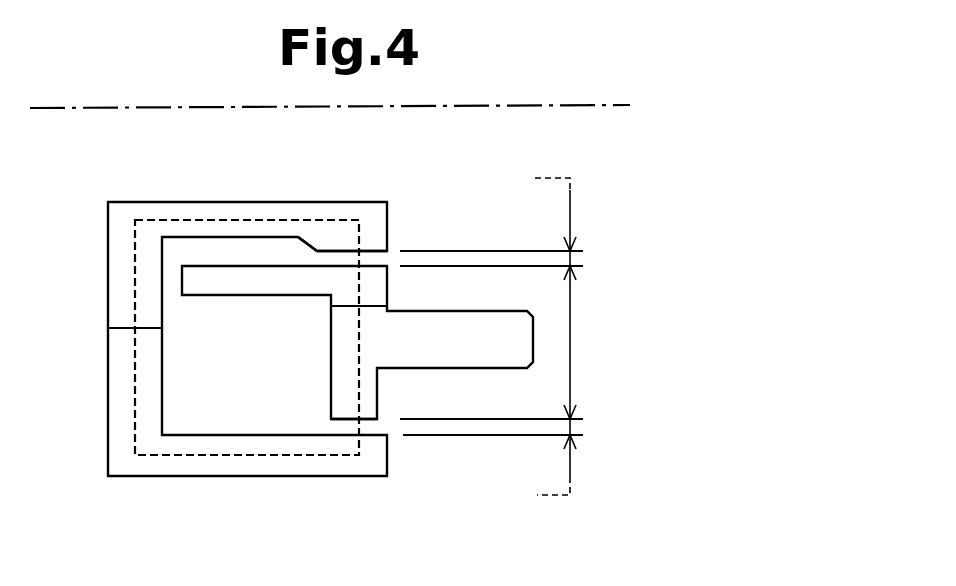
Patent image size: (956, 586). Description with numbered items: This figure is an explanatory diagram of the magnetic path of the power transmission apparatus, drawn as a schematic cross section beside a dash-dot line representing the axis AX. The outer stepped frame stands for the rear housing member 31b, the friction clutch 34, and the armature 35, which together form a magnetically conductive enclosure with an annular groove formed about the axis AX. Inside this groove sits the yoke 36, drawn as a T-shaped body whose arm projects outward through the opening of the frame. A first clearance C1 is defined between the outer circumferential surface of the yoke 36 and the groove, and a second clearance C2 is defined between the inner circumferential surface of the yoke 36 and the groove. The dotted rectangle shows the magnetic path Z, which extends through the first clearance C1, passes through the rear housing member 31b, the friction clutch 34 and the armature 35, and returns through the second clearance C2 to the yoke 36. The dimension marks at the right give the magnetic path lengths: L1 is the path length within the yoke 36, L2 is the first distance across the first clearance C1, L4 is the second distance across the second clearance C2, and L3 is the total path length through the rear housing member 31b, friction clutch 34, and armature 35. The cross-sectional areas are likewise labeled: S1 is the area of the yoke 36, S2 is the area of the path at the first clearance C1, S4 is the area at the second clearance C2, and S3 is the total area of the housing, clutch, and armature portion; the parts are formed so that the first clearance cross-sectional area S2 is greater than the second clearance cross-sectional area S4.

The axis AX is at (463, 107).
The rear housing member 31b is at (247, 374).
The friction clutch 34 is at (247, 374).
The armature 35 is at (195, 463).
The yoke 36 is at (233, 287).
The cross-sectional area of the yoke S1 is at (372, 307).
The first clearance cross-sectional area S2 is at (352, 418).
The total cross-sectional area of the rear housing member, friction clutch and armat S3 is at (120, 328).
The second clearance cross-sectional area S4 is at (372, 250).
The first clearance C1 is at (385, 425).
The second clearance C2 is at (383, 261).
The magnetic path Z is at (135, 403).
The magnetic path length of the yoke L1 is at (592, 342).
The magnetic path length of the first clearance L2 is at (598, 424).
The total magnetic path length of the rear housing member, friction clutch and armat L3 is at (578, 336).
The magnetic path length of the second clearance L4 is at (594, 258).